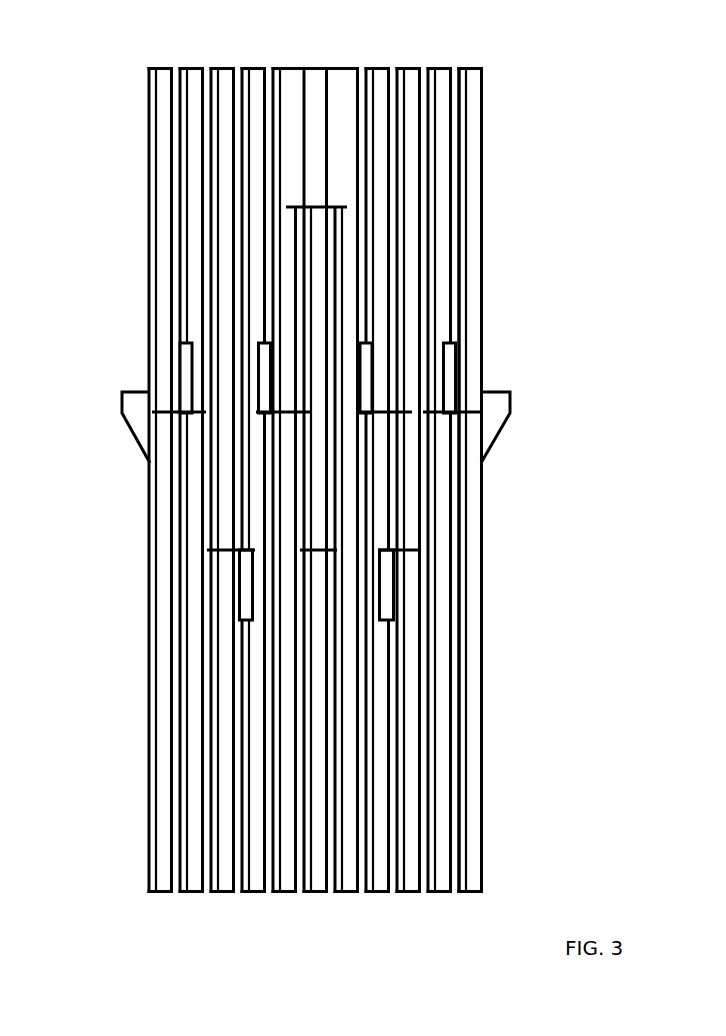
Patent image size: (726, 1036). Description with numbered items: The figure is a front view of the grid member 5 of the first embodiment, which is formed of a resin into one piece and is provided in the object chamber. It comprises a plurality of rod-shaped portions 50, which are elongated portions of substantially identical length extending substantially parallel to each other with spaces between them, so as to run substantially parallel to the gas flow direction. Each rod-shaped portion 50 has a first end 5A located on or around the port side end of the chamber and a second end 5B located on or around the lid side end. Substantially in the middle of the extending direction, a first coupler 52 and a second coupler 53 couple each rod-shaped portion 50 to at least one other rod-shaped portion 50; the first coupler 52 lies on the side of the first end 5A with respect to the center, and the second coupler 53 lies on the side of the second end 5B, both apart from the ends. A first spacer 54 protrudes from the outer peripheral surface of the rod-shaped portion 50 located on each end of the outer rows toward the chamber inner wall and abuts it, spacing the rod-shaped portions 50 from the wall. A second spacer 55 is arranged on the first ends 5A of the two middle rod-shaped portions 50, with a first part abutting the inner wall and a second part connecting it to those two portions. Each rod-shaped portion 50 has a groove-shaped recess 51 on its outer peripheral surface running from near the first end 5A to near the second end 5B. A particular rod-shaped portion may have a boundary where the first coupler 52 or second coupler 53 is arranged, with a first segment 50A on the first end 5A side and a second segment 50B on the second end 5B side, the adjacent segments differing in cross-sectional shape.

The grid member 5 is at (319, 476).
The first end 5A is at (200, 48).
The second end 5B is at (201, 914).
The rod-shaped portion 50 is at (319, 476).
The first segment 50A is at (339, 255).
The second segment 50B is at (339, 677).
The recess 51 is at (483, 172).
The first coupler 52 is at (187, 366).
The second coupler 53 is at (243, 585).
The first spacer 54 is at (140, 425).
The second spacer 55 is at (313, 88).